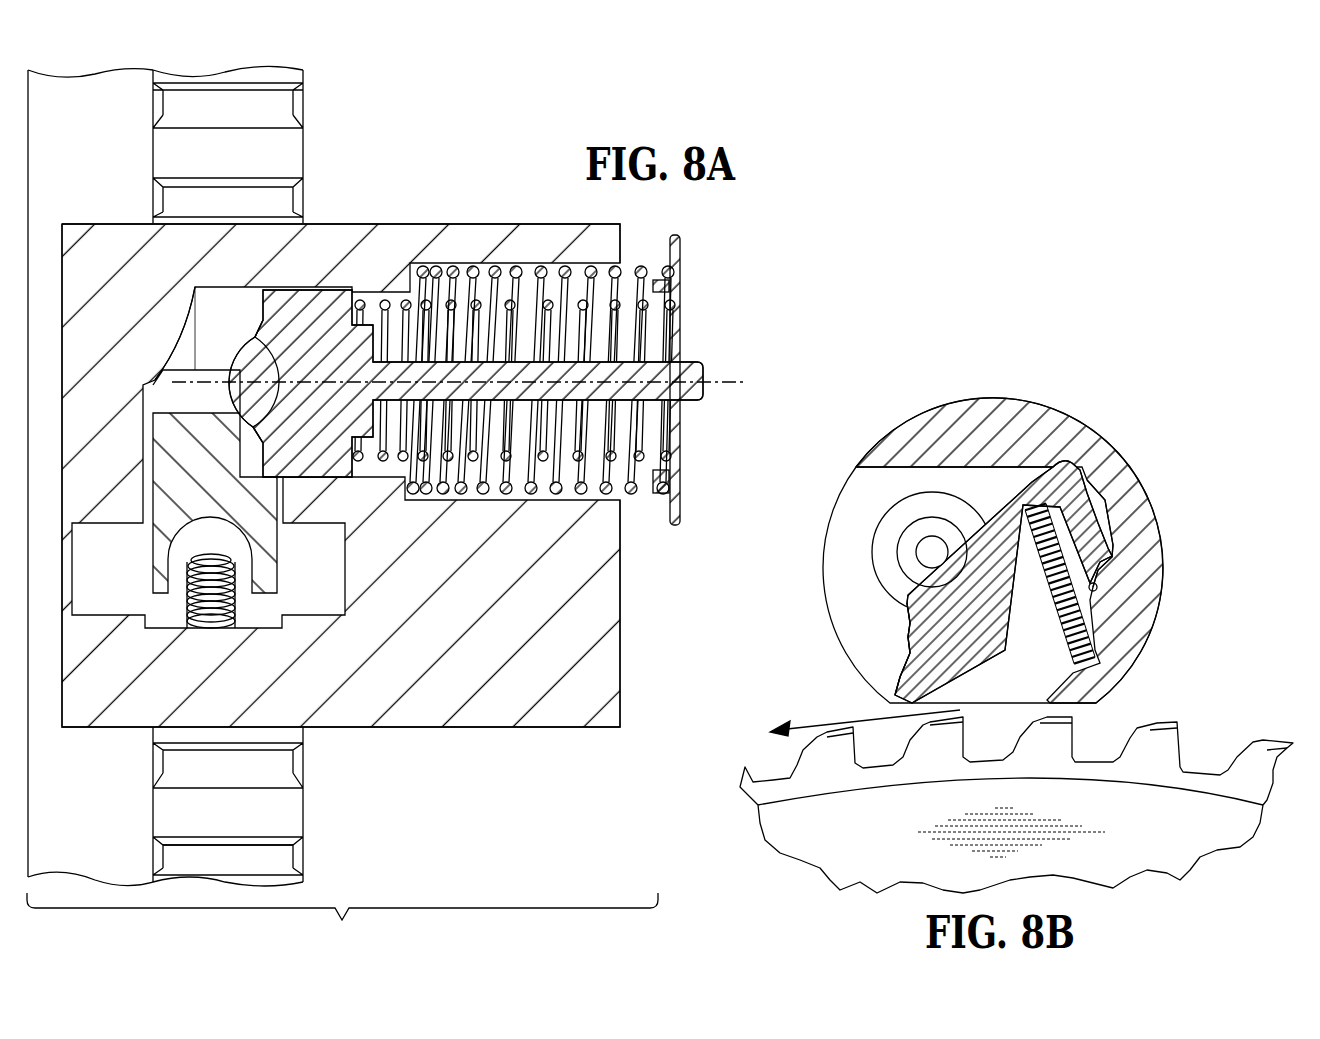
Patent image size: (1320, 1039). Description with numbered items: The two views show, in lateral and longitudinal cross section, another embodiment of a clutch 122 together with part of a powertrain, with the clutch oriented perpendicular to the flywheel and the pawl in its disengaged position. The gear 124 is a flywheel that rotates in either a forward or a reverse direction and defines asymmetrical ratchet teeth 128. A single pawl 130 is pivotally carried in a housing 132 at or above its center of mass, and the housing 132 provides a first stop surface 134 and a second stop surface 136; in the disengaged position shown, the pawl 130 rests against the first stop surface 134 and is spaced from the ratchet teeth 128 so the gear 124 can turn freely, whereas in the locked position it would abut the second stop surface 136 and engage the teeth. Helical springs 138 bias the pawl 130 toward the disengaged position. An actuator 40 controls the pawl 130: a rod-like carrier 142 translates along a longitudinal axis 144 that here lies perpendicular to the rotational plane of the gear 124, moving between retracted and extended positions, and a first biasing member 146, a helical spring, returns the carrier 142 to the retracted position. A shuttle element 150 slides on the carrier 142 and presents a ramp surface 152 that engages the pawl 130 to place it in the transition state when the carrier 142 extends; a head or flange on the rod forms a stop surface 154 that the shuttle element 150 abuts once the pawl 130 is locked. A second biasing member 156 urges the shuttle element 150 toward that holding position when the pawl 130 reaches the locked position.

In FIG. 8A, the actuator 40 is at (342, 920).
In FIG. 8A, the clutch 122 is at (480, 198).
In FIG. 8B, the clutch 122 is at (845, 446).
In FIG. 8A, the gear 124 is at (280, 856).
In FIG. 8B, the gear 124 is at (773, 777).
In FIG. 8A, the ratchet teeth 128 is at (255, 100).
In FIG. 8B, the ratchet teeth 128 is at (1160, 740).
In FIG. 8A, the pawl 130 is at (172, 483).
In FIG. 8B, the pawl 130 is at (900, 645).
In FIG. 8A, the housing 132 is at (528, 728).
In FIG. 8B, the housing 132 is at (1163, 553).
In FIG. 8B, the first stop surface 134 is at (898, 675).
In FIG. 8B, the second stop surface 136 is at (1093, 580).
In FIG. 8A, the springs 138 is at (185, 620).
In FIG. 8B, the springs 138 is at (1073, 565).
In FIG. 8A, the carrier 142 is at (687, 368).
In FIG. 8B, the carrier 142 is at (930, 556).
In FIG. 8A, the longitudinal axis 144 is at (735, 378).
In FIG. 8A, the first biasing member 146 is at (587, 470).
In FIG. 8A, the shuttle element 150 is at (318, 288).
In FIG. 8B, the shuttle element 150 is at (933, 494).
In FIG. 8A, the ramp surface 152 is at (250, 350).
In FIG. 8B, the ramp surface 152 is at (910, 522).
In FIG. 8A, the stop surface 154 is at (268, 298).
In FIG. 8A, the second biasing member 156 is at (660, 437).